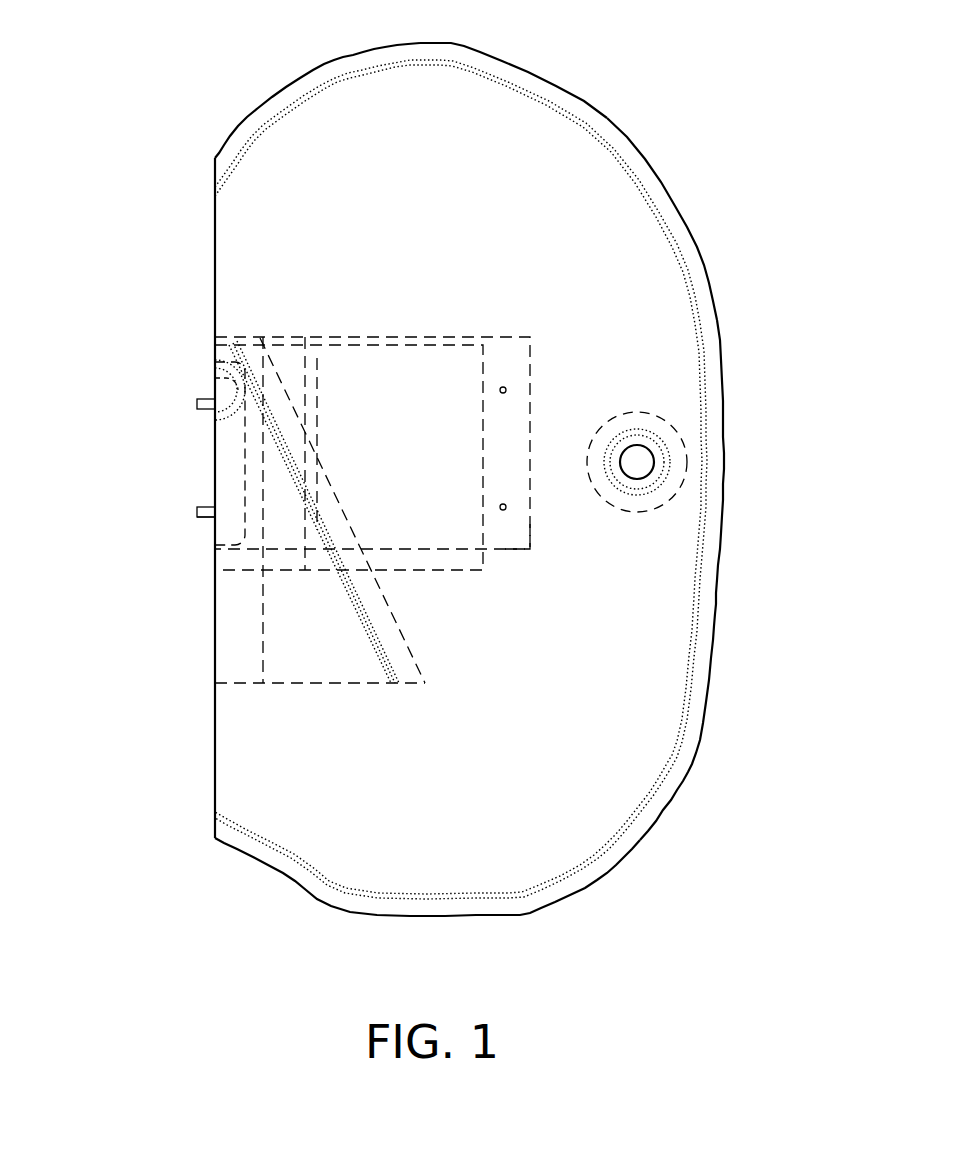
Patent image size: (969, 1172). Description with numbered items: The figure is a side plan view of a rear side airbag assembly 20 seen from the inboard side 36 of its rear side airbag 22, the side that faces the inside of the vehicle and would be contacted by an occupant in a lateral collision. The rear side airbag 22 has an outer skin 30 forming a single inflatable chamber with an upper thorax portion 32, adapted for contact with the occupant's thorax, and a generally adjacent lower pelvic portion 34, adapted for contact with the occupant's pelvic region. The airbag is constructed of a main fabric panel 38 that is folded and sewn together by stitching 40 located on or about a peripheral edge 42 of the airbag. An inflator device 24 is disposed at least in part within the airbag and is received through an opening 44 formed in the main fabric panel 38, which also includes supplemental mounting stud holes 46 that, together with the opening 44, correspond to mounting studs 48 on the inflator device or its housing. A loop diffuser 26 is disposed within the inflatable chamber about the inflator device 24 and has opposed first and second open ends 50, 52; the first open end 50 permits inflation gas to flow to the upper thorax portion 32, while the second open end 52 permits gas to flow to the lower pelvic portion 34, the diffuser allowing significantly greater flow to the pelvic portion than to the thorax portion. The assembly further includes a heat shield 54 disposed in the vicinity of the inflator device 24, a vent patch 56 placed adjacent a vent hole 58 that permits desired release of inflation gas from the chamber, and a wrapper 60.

The rear side airbag assembly 20 is at (740, 128).
The rear side airbag 22 is at (553, 780).
The inflator device 24 is at (233, 455).
The loop diffuser 26 is at (292, 657).
The outer skin 30 is at (640, 250).
The upper thorax portion 32 is at (568, 147).
The lower pelvic portion 34 is at (477, 833).
The inboard side 36 is at (643, 605).
The main fabric panel 38 is at (308, 117).
The stitching 40 is at (642, 150).
The peripheral edge 42 is at (717, 320).
The opening 44 is at (232, 356).
The supplemental mounting stud holes 46 is at (213, 515).
The mounting studs 48 is at (197, 404).
The first open end 50 is at (231, 345).
The second open end 52 is at (268, 685).
The heat shield 54 is at (408, 375).
The vent patch 56 is at (672, 430).
The vent hole 58 is at (655, 460).
The wrapper 60 is at (517, 550).